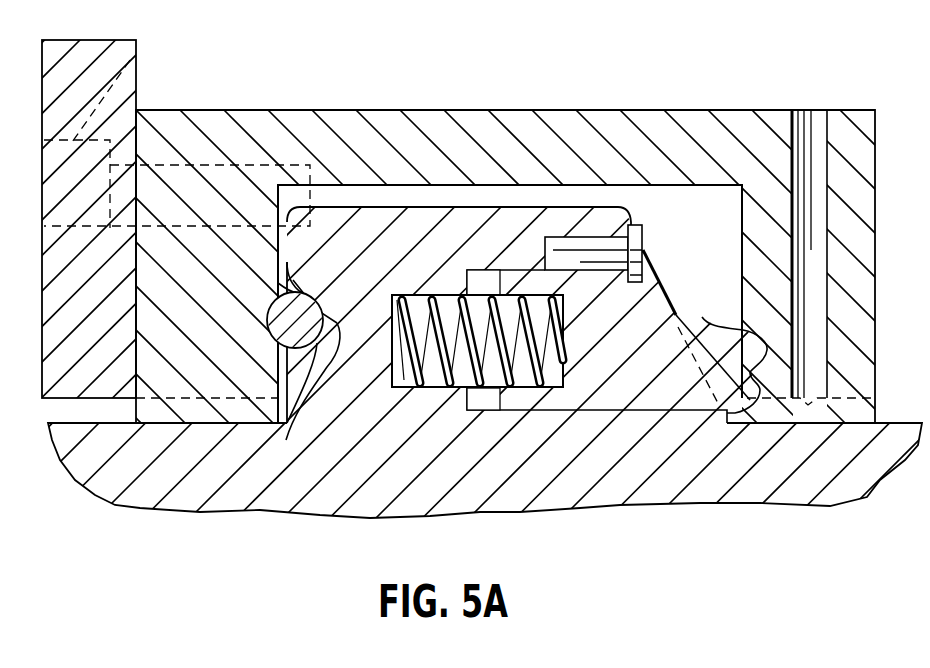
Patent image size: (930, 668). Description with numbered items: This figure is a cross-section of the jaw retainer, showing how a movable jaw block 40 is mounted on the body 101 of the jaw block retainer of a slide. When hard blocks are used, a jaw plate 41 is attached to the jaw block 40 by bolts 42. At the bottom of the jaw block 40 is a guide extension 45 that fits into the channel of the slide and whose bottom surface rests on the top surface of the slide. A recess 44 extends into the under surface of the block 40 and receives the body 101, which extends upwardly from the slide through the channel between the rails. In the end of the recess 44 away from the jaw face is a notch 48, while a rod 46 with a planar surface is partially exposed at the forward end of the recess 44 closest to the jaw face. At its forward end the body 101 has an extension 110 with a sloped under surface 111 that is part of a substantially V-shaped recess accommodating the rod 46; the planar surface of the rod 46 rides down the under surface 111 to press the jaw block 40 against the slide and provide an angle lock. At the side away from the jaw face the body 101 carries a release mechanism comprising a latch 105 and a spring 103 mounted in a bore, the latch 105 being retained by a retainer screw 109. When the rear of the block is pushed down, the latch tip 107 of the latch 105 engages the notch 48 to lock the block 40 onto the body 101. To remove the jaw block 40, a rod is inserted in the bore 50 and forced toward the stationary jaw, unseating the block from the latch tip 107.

The jaw block 40 is at (343, 118).
The jaw plate 41 is at (120, 62).
The bolts 42 is at (140, 82).
The recess 44 is at (664, 203).
The guide extension 45 is at (188, 410).
The rod 46 is at (288, 332).
The notch 48 is at (767, 397).
The bore 50 is at (818, 118).
The body 101 is at (427, 222).
The spring 103 is at (432, 395).
The latch 105 is at (642, 380).
The latch tip 107 is at (702, 317).
The retainer screw 109 is at (644, 238).
The extension 110 is at (302, 258).
The sloped under surface 111 is at (286, 440).